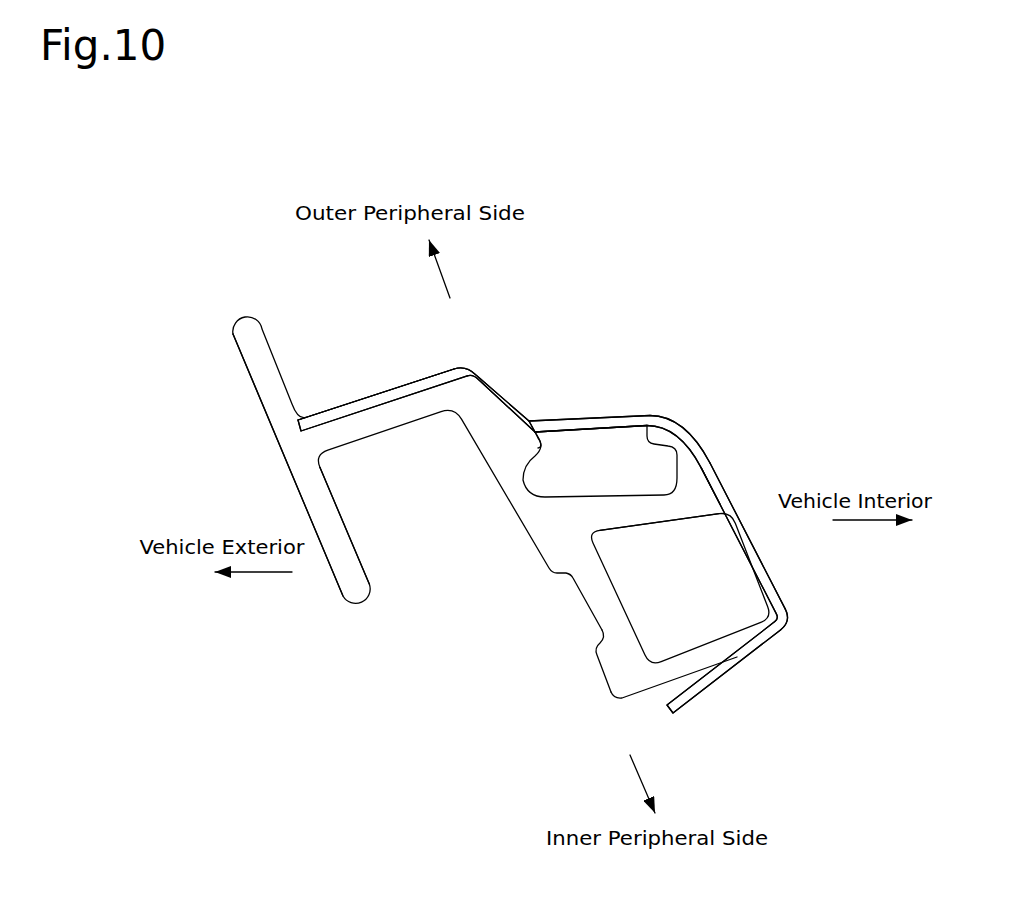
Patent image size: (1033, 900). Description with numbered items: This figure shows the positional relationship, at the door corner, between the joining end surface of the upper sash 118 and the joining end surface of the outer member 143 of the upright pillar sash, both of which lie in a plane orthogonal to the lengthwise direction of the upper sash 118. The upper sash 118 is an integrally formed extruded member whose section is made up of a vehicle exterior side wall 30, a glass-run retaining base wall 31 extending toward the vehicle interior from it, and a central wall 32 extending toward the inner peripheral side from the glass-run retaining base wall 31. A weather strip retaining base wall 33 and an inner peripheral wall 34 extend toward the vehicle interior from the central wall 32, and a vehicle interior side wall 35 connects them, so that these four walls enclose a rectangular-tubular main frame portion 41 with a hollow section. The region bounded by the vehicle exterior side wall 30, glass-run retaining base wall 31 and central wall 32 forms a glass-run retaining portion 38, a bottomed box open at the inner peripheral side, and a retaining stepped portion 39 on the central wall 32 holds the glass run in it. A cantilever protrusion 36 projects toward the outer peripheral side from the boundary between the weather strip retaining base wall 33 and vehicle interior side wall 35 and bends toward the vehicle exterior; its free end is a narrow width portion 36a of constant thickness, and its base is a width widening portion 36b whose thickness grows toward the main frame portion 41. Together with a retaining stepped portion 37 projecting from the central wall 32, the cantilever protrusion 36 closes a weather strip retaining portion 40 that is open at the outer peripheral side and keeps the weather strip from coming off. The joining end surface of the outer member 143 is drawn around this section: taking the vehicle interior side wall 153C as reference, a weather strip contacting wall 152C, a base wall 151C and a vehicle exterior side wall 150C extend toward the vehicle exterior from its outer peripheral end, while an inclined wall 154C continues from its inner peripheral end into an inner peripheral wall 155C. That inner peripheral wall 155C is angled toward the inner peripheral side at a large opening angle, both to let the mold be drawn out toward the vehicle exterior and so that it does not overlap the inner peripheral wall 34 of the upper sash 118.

The vehicle exterior side wall 30 is at (317, 505).
The glass-run retaining base wall 31 is at (418, 407).
The central wall 32 is at (503, 460).
The weather strip retaining base wall 33 is at (630, 507).
The inner peripheral wall 34 is at (717, 653).
The vehicle interior side wall 35 is at (718, 507).
The cantilever protrusion 36 is at (763, 395).
The narrow width portion 36a is at (657, 430).
The width widening portion 36b is at (700, 472).
The retaining stepped portion 37 is at (538, 447).
The glass-run retaining portion 38 is at (441, 582).
The retaining stepped portion 39 is at (598, 645).
The weather strip retaining portion 40 is at (583, 456).
The main frame portion 41 is at (641, 700).
The upper sash 118 is at (250, 378).
The outer member 143 is at (574, 416).
The vehicle exterior side wall 150C is at (340, 415).
The base wall 151C is at (507, 400).
The weather strip contacting wall 152C is at (630, 417).
The vehicle interior side wall 153C is at (762, 552).
The inclined wall 154C is at (786, 625).
The inner peripheral wall 155C is at (707, 687).